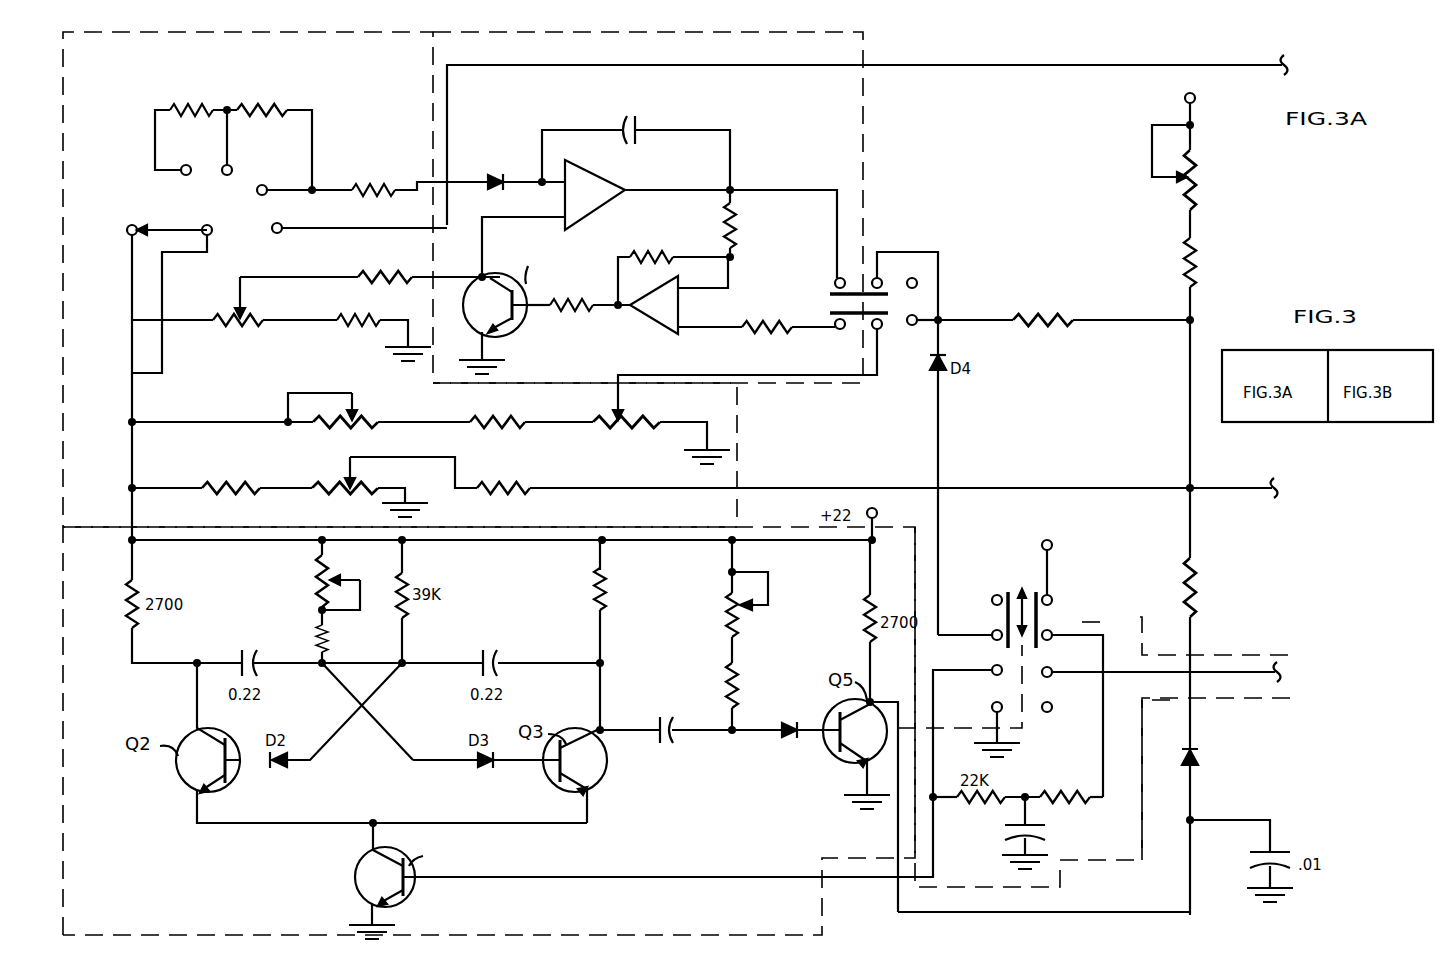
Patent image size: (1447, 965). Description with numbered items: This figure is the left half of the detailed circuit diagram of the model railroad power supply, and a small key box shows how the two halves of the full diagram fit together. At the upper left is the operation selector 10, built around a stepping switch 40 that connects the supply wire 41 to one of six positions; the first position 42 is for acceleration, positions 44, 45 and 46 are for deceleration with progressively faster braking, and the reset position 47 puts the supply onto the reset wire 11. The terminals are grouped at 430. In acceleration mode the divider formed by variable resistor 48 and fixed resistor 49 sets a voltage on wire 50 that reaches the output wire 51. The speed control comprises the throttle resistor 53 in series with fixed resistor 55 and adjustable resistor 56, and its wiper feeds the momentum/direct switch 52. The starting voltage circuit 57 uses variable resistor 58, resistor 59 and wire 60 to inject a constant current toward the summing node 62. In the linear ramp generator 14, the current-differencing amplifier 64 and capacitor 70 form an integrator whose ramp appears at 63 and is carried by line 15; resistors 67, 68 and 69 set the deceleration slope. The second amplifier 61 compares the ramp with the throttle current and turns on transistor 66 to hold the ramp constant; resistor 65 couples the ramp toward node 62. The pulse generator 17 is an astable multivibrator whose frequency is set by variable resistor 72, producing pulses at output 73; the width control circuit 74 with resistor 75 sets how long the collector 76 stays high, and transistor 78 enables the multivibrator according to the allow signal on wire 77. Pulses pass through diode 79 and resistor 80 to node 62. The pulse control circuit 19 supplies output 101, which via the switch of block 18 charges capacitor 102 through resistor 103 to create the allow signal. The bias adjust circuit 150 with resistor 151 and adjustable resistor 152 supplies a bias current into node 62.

The operation selector 10 is at (392, 56).
The reset wire 11 is at (1058, 64).
The linear ramp generator 14 is at (812, 56).
The ramp output line 15 is at (834, 248).
The pulse generator 17 is at (724, 916).
The automatic control circuit 18 is at (1055, 912).
The pulse control circuit 19 is at (1126, 631).
The stepping switch 40 is at (175, 288).
The wire 41 is at (162, 283).
The first switch position 42 is at (151, 381).
The terminal group 430 is at (130, 189).
The third switch position 44 is at (181, 159).
The fourth switch position 45 is at (238, 142).
The fifth switch position 46 is at (284, 179).
The reset position 47 is at (354, 217).
The variable resistor 48 is at (226, 312).
The fixed resistor 49 is at (356, 312).
The wire 50 is at (312, 274).
The wire 51 is at (433, 278).
The momentum/direct switch 52 is at (860, 338).
The throttle resistor 53 is at (598, 426).
The fixed resistor 55 is at (485, 422).
The adjustable resistor 56 is at (365, 419).
The starting voltage circuit 57 is at (316, 502).
The variable resistor 58 is at (336, 481).
The resistor 59 is at (519, 487).
The wire 60 is at (584, 488).
The second current-differencing amplifier 61 is at (658, 324).
The current summing node 62 is at (1190, 488).
The ramp generator output 63 is at (730, 190).
The current-differencing amplifier 64 is at (608, 180).
The resistor 1M 65 is at (1044, 316).
The transistor 66 is at (519, 320).
The resistor 67 is at (202, 106).
The resistor 68 is at (254, 108).
The resistor 69 is at (359, 182).
The capacitor 70 is at (632, 121).
The variable resistor 72 is at (312, 590).
The output 73 is at (620, 730).
The width control circuit 74 is at (756, 748).
The pulse width control resistor 75 is at (726, 608).
The collector 76 is at (893, 702).
The wire 77 is at (684, 877).
The transistor 78 is at (356, 880).
The diode 79 is at (1198, 757).
The resistor 80 is at (1194, 583).
The output 101 is at (1168, 675).
The capacitor 102 is at (1001, 834).
The resistor 103 is at (1084, 804).
The bias adjust circuit 150 is at (1162, 152).
The resistor 680K 151 is at (1186, 269).
The adjustable resistor 152 is at (1183, 196).